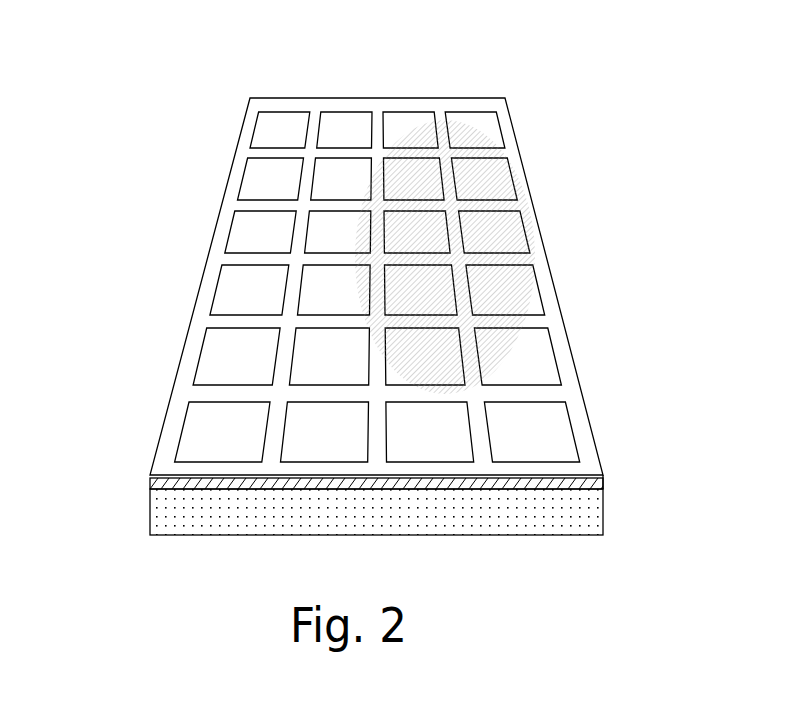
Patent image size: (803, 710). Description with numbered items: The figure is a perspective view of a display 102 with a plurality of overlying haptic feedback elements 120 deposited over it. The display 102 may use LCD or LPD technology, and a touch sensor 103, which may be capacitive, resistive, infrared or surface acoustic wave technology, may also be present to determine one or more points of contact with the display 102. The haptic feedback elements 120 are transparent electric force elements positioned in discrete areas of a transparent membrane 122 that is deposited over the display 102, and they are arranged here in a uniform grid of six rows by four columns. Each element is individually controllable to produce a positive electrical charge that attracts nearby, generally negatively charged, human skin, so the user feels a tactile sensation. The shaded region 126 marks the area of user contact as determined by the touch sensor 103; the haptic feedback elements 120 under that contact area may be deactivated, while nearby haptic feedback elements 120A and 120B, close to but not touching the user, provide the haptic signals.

The haptic feedback elements 120 is at (354, 319).
The haptic feedback element 120A is at (343, 181).
The haptic feedback element 120B is at (430, 432).
The shaded region 126 is at (508, 152).
The transparent membrane 122 is at (150, 476).
The display 102 is at (150, 527).
The touch sensor 103 is at (605, 483).